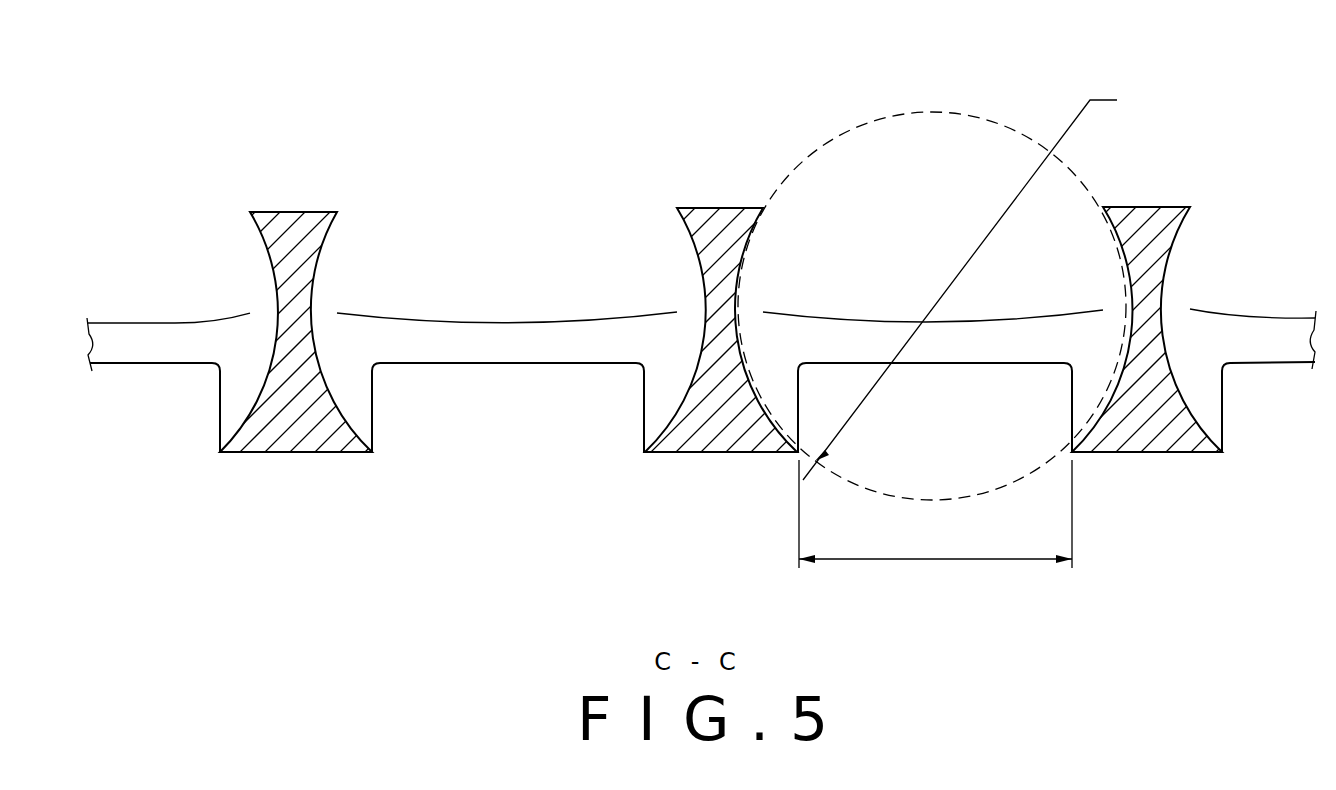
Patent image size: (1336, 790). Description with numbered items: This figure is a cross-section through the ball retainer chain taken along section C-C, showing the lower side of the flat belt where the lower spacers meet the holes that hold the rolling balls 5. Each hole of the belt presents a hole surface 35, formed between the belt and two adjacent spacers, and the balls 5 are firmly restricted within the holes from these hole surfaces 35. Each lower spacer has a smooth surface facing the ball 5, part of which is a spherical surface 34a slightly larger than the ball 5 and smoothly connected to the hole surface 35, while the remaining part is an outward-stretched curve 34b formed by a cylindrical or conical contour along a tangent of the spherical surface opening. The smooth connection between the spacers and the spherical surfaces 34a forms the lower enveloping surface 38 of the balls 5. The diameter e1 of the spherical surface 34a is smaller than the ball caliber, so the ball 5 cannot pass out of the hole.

The lower enveloping surface 38 is at (718, 135).
The hole surface 35 is at (502, 350).
The spherical surface 34a is at (338, 345).
The outward-stretched curve 34b is at (320, 255).
The ball 5 is at (1003, 397).
The diameter of smooth surface e1 is at (935, 514).